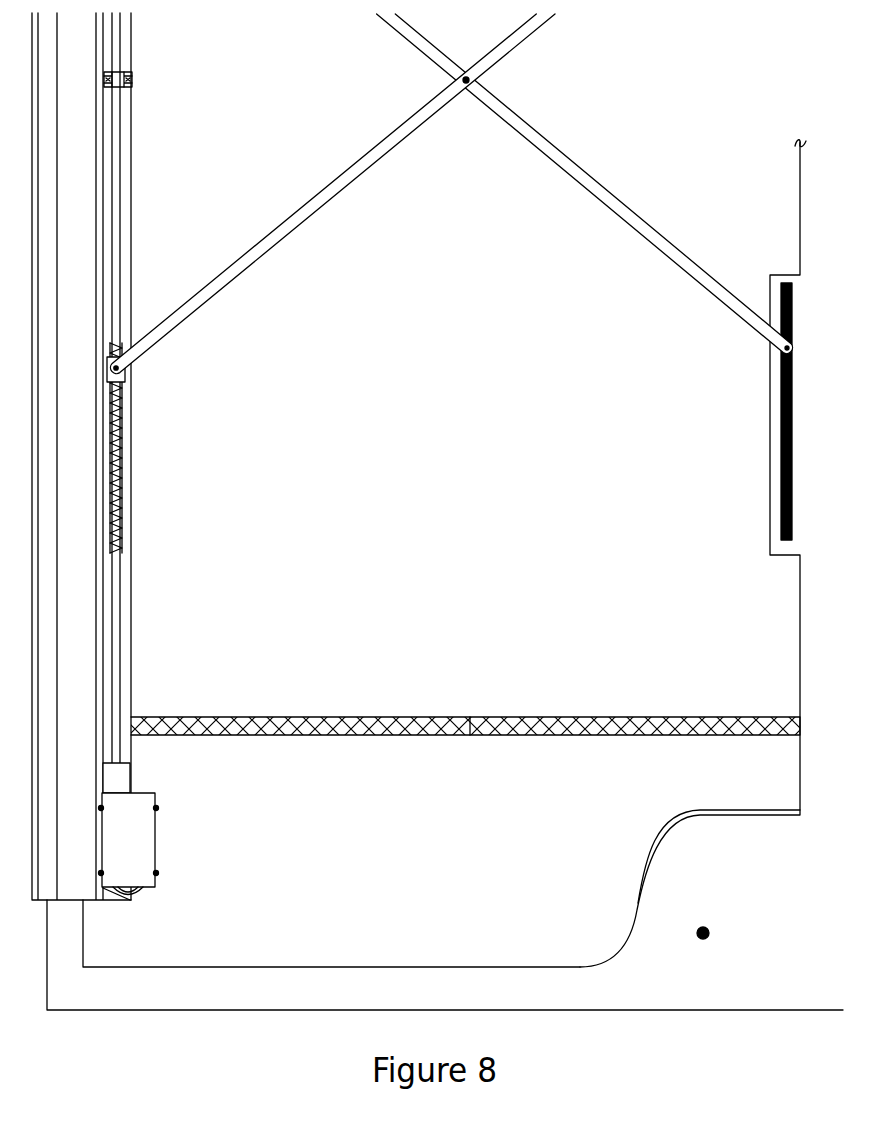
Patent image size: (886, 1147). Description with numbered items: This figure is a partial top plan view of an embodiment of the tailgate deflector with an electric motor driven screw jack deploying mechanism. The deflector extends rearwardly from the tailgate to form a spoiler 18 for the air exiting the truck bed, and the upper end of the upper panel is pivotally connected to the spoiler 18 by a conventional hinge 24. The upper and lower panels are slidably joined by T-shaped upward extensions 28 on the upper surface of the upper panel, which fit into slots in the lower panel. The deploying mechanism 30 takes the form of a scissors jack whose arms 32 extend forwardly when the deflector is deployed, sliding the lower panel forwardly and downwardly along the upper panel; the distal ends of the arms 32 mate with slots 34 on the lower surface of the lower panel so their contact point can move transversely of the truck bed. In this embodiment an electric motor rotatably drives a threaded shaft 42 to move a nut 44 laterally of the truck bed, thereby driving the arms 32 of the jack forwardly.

The spoiler 18 is at (82, 732).
The hinge 24 is at (713, 940).
The T-shaped upward extensions 28 is at (600, 715).
The mechanism 30 is at (130, 847).
The arms 32 is at (230, 288).
The slots 34 is at (765, 438).
The threaded shaft 42 is at (123, 510).
The nut 44 is at (125, 383).